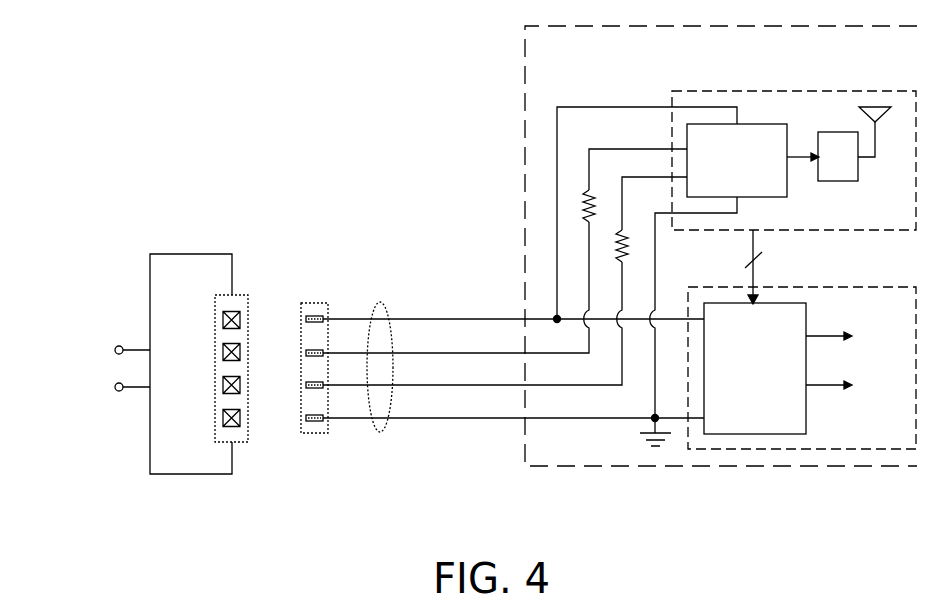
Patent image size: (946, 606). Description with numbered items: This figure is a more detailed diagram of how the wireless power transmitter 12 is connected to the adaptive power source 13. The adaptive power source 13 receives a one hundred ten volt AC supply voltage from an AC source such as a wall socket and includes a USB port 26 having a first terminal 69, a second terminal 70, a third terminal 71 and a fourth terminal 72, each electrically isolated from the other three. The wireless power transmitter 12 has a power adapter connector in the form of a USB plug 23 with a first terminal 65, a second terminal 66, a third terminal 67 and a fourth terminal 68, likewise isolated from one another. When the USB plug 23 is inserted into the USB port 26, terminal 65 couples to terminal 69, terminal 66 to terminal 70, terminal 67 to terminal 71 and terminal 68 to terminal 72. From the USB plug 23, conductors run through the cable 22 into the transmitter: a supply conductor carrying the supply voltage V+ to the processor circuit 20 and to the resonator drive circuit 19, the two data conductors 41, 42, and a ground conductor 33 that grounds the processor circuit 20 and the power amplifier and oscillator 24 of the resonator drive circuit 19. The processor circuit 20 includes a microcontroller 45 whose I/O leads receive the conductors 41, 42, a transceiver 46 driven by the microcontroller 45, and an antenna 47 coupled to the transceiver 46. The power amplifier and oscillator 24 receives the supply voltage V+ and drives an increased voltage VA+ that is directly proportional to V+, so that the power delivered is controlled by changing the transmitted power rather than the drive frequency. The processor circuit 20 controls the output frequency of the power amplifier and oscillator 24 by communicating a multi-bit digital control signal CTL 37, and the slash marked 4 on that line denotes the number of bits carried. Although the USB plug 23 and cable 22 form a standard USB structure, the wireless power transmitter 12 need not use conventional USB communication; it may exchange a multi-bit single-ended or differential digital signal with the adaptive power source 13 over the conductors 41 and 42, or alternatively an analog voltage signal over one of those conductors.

The wireless power transmitter 12 is at (525, 50).
The adaptive power source 13 is at (182, 254).
The USB port 26 is at (243, 295).
The USB plug 23 is at (323, 303).
The first terminal 69 is at (222, 320).
The second terminal 70 is at (222, 352).
The third terminal 71 is at (222, 385).
The fourth terminal 72 is at (222, 418).
The first terminal 65 is at (306, 319).
The second terminal 66 is at (306, 353).
The third terminal 67 is at (306, 385).
The fourth terminal 68 is at (306, 418).
The cable 22 is at (387, 428).
The processor circuit 20 is at (500, 317).
The conductor 41 is at (500, 351).
The conductor 42 is at (498, 384).
The ground conductor 33 is at (497, 420).
The microcontroller 45 is at (765, 173).
The transceiver 46 is at (847, 173).
The antenna 47 is at (878, 128).
The digital control signal (CTL) 37 is at (782, 267).
The control bus width indicator 4 is at (747, 262).
The resonator drive circuit 19 is at (903, 438).
The power amplifier and oscillator 24 is at (764, 413).